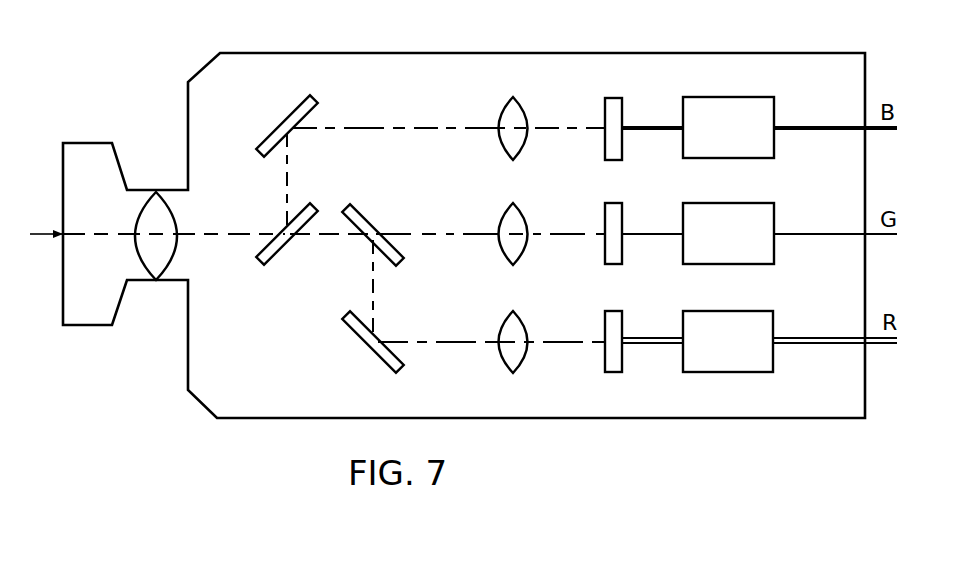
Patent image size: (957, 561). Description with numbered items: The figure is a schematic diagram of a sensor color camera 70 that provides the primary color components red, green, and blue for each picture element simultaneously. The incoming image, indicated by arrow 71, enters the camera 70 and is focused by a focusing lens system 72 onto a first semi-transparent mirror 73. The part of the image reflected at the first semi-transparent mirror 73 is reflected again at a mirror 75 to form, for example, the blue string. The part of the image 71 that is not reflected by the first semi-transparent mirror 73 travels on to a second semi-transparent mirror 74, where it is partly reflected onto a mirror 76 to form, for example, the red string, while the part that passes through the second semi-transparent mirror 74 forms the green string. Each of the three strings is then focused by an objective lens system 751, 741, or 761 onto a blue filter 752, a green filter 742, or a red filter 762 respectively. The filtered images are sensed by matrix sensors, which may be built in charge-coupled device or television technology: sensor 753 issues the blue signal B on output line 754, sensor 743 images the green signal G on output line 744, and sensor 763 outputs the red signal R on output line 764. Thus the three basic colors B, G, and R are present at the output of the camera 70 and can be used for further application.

The camera 70 is at (140, 100).
The incoming image 71 is at (40, 232).
The focusing lens system 72 is at (153, 212).
The first semi-transparent mirror 73 is at (273, 255).
The second semi-transparent mirror 74 is at (372, 218).
The mirror 75 is at (292, 116).
The mirror 76 is at (372, 353).
The objective lens system 751 is at (505, 118).
The blue filter 752 is at (605, 112).
The sensor 753 is at (715, 98).
The output line 754 is at (813, 125).
The objective lens system 741 is at (505, 227).
The green filter 742 is at (605, 215).
The sensor 743 is at (725, 205).
The output line 744 is at (795, 230).
The objective lens system 761 is at (500, 332).
The red filter 762 is at (605, 318).
The sensor 763 is at (717, 312).
The output line 764 is at (807, 337).